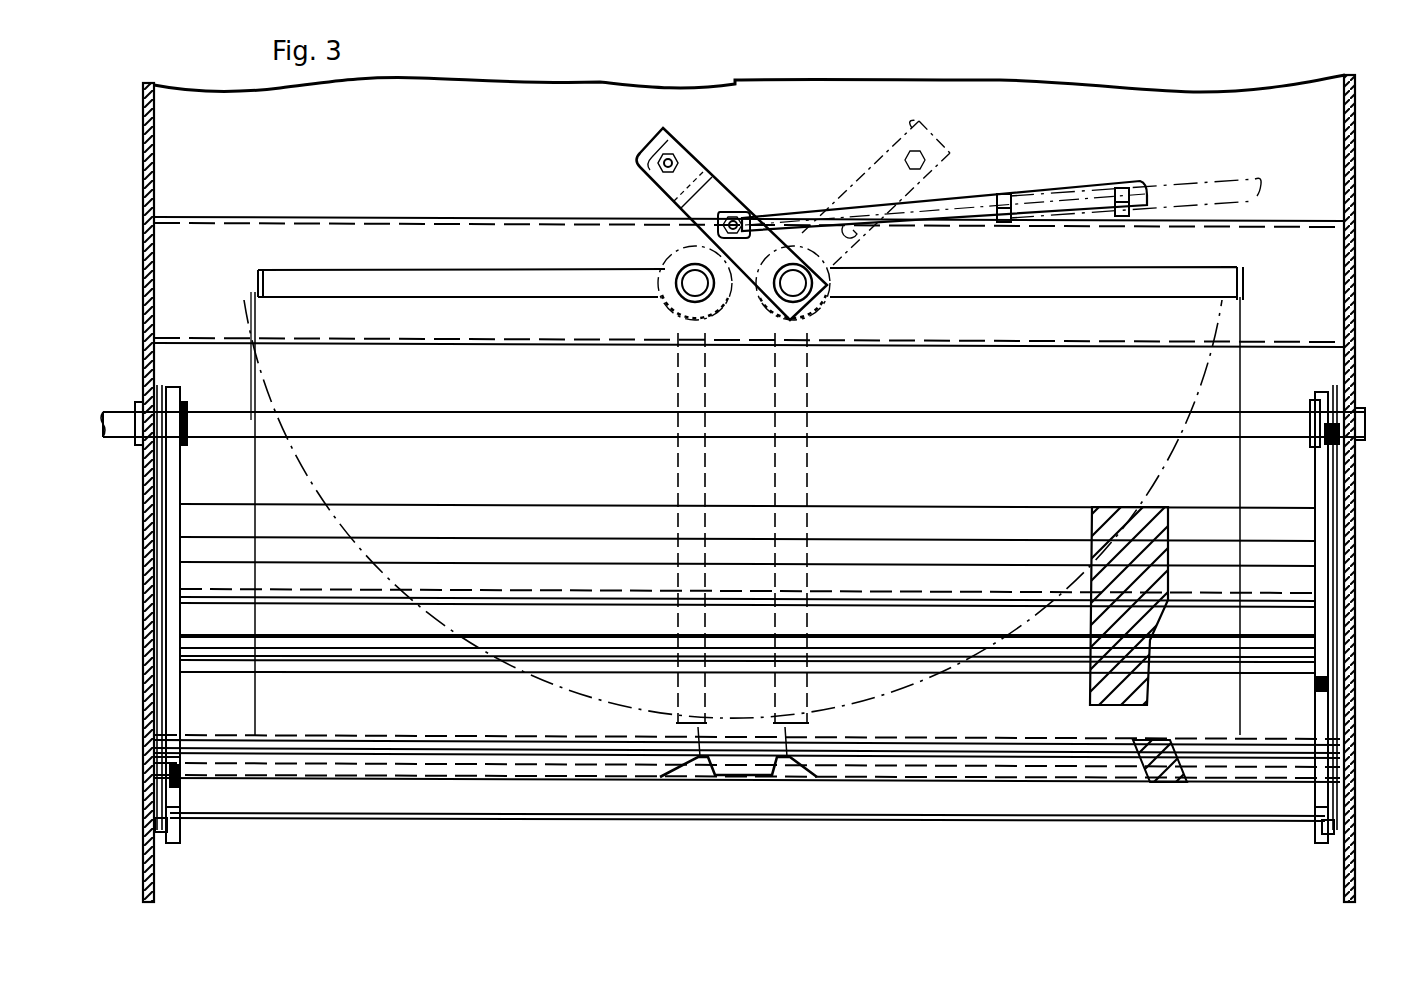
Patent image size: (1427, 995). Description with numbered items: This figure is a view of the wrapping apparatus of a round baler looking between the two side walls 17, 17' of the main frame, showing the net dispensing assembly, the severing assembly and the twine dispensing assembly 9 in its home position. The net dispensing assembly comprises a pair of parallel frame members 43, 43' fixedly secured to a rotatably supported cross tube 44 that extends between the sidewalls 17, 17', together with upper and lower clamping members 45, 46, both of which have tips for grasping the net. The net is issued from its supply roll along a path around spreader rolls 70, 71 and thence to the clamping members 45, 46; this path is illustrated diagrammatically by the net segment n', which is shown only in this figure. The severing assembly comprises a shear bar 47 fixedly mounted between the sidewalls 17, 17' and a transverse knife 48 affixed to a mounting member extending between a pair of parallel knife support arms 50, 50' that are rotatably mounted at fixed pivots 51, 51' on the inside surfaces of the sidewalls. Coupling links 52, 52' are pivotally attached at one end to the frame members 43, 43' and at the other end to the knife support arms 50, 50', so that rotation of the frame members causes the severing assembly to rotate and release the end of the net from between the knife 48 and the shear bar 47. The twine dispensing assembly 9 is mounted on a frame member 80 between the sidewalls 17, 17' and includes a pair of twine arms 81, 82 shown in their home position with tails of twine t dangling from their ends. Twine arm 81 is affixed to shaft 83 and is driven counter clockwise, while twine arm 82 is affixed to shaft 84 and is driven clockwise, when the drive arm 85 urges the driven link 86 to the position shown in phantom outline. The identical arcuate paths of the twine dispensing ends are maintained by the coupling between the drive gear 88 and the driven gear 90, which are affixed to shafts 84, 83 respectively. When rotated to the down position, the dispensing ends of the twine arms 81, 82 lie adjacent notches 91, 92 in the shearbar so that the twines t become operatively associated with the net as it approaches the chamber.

The twine dispensing assembly 9 is at (780, 190).
The side wall 17 is at (194, 492).
The side wall 17' is at (1310, 488).
The frame member 43 is at (202, 615).
The frame member 43' is at (1293, 617).
The cross tube 44 is at (935, 425).
The upper clamping member 45 is at (1283, 624).
The lower clamping member 46 is at (364, 718).
The shear bar 47 is at (165, 750).
The transverse knife 48 is at (470, 790).
The knife support arm 50 is at (215, 807).
The knife support arm 50' is at (1248, 837).
The fixed pivot 51 is at (189, 860).
The fixed pivot 51' is at (1290, 865).
The coupling link 52 is at (124, 607).
The coupling link 52' is at (1380, 607).
The spreader roll 70 is at (985, 505).
The spreader roll 71 is at (935, 580).
The frame member 80 is at (1312, 287).
The twine arm 81 is at (377, 270).
The twine arm 82 is at (1063, 278).
The shaft 83 is at (688, 284).
The shaft 84 is at (800, 283).
The drive arm 85 is at (1050, 196).
The driven link 86 is at (787, 222).
The drive gear 88 is at (825, 315).
The driven gear 90 is at (672, 250).
The notch 91 is at (700, 782).
The notch 92 is at (790, 782).
The twine t is at (253, 400).
The net segment n' is at (1101, 644).